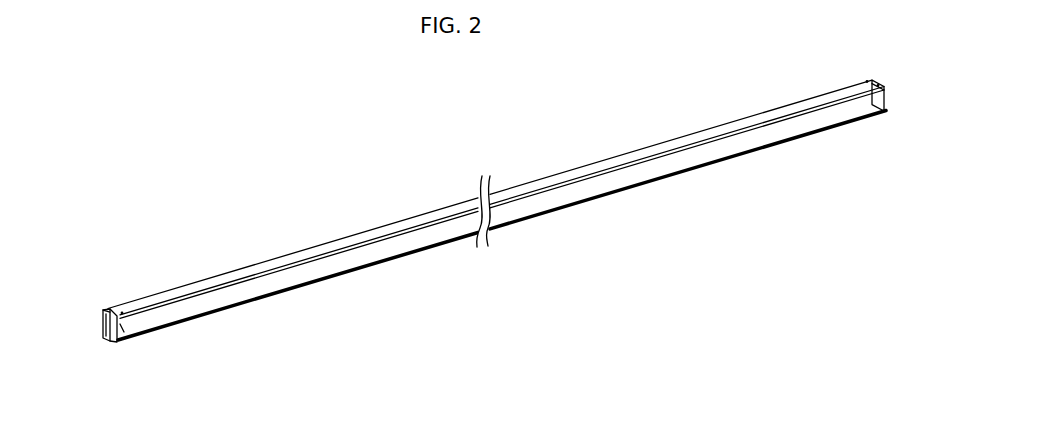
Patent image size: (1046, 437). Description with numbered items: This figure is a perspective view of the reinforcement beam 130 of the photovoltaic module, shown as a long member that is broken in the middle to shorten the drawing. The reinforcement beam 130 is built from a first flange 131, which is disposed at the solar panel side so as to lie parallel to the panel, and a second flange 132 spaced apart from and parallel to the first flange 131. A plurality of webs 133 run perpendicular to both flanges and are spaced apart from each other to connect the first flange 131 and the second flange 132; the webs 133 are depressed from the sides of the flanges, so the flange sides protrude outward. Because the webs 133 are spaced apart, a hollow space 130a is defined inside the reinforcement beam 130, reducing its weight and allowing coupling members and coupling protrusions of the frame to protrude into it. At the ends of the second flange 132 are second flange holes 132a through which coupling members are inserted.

The reinforcement beam 130 is at (177, 165).
The hollow space 130a is at (122, 328).
The first flange 131 is at (110, 341).
The second flange 132 is at (165, 298).
The second flange hole 132a is at (114, 300).
The web 133 is at (104, 322).